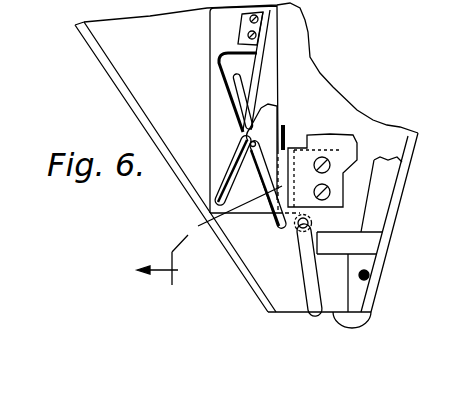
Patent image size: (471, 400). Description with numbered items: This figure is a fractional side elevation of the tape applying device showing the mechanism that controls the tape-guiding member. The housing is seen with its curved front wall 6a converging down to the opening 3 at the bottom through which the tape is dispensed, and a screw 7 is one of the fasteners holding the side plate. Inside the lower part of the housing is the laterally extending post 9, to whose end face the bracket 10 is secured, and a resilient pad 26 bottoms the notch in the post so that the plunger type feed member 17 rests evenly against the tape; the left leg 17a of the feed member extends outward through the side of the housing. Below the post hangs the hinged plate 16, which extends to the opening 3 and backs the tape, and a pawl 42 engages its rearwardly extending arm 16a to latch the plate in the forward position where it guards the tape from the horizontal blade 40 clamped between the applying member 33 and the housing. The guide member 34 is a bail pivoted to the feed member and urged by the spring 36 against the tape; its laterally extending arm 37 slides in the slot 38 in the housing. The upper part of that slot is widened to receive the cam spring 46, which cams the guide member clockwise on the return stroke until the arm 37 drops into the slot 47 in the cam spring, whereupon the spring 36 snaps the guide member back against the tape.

The opening 3 is at (295, 303).
The curved front wall 6a is at (108, 72).
The screw 7 is at (162, 267).
The post 9 is at (293, 148).
The bracket 10 is at (358, 150).
The plate 16 is at (303, 280).
The rearwardly extending arm 16a is at (363, 243).
The feed member 17 is at (283, 212).
The left leg 17a is at (270, 118).
The resilient pad 26 is at (313, 208).
The applying member 33 is at (360, 317).
The guide member 34 is at (291, 228).
The spring 36 is at (220, 236).
The laterally extending arm 37 is at (240, 112).
The slot 38 is at (210, 190).
The horizontal blade 40 is at (325, 320).
The pawl 42 is at (385, 188).
The cam spring 46 is at (270, 53).
The slot 47 is at (253, 80).